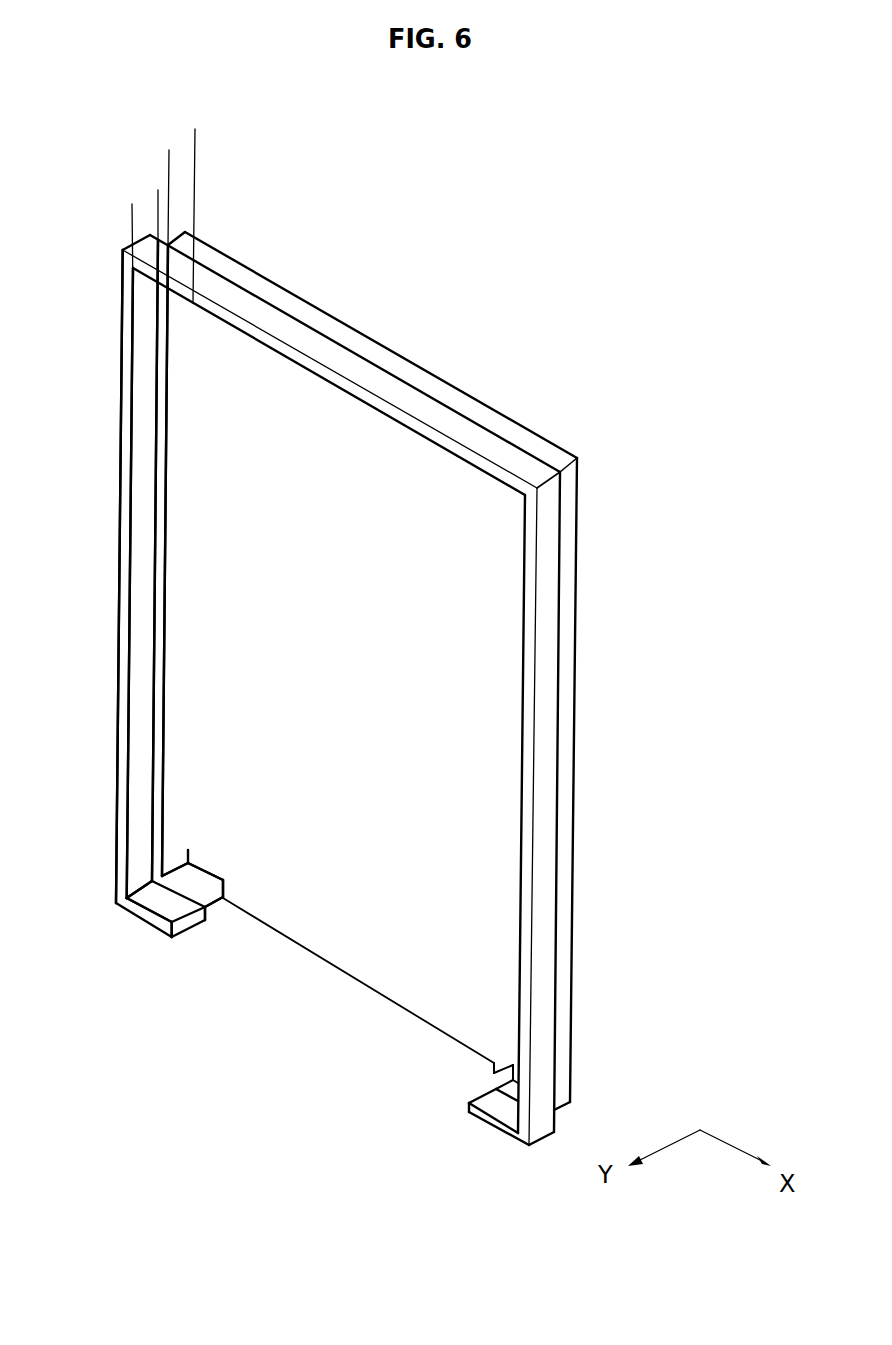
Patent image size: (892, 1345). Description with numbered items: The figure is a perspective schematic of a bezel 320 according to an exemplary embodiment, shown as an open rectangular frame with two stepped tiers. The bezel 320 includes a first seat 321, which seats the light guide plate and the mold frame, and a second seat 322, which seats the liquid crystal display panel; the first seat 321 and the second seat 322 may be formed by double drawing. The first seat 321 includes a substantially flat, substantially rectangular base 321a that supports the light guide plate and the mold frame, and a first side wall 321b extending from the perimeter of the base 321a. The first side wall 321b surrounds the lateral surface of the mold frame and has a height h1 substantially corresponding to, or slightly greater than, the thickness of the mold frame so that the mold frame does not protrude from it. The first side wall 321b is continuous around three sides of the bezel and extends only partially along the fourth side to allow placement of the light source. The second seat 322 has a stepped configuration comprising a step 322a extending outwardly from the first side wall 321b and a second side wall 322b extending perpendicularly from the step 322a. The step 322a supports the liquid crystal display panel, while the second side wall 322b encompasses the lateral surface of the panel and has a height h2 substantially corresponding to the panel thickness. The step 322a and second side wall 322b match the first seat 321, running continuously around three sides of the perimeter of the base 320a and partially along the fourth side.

The bezel 320 is at (627, 404).
The base 320a is at (410, 1014).
The first seat 321 is at (292, 1028).
The base 321a is at (342, 957).
The first side wall 321b is at (213, 903).
The second seat 322 is at (130, 1010).
The step 322a is at (158, 904).
The second side wall 322b is at (192, 932).
The height of first side wall h1 is at (147, 167).
The height of second side wall h2 is at (182, 182).